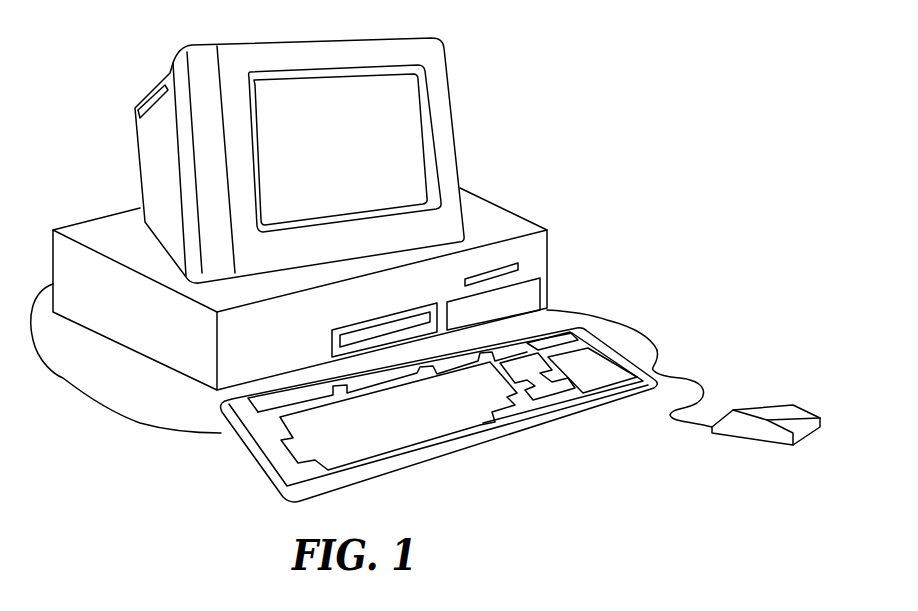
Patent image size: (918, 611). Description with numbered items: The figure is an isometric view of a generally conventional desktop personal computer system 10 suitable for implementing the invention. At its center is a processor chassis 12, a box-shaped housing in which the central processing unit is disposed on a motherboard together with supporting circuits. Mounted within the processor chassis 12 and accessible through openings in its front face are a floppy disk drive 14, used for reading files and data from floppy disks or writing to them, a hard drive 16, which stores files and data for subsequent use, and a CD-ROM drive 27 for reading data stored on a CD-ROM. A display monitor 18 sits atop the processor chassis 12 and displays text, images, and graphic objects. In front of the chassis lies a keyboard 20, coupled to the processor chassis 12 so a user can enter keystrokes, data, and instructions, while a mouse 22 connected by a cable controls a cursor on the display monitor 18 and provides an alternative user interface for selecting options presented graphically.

The personal computer system 10 is at (444, 295).
The processor chassis 12 is at (351, 287).
The floppy disk drive 14 is at (490, 262).
The hard drive 16 is at (542, 290).
The display monitor 18 is at (450, 103).
The keyboard 20 is at (536, 426).
The mouse 22 is at (795, 447).
The CD-ROM drive 27 is at (332, 346).